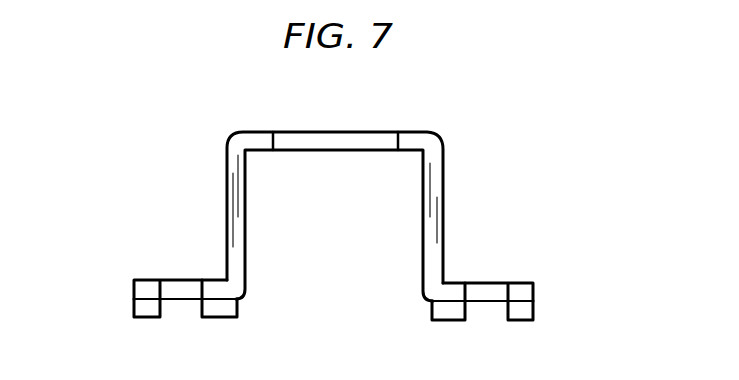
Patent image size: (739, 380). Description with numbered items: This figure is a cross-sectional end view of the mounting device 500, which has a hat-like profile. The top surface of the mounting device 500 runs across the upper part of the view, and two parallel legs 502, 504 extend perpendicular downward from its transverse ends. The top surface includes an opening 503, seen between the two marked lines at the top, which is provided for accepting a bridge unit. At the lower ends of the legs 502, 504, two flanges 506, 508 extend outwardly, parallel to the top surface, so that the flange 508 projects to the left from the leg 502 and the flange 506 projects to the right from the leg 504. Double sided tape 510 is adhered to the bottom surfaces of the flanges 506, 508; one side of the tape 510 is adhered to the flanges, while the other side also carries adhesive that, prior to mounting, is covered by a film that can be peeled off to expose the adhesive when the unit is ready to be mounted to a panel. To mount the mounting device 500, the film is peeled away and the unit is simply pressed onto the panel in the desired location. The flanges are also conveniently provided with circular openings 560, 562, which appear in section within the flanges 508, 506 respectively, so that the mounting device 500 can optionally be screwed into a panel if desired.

The mounting device 500 is at (412, 132).
The leg 502 is at (243, 230).
The opening 503 is at (335, 145).
The leg 504 is at (444, 234).
The flange 506 is at (529, 295).
The flange 508 is at (149, 290).
The double sided tape 510 is at (149, 305).
The circular opening 560 is at (181, 290).
The circular opening 562 is at (495, 293).